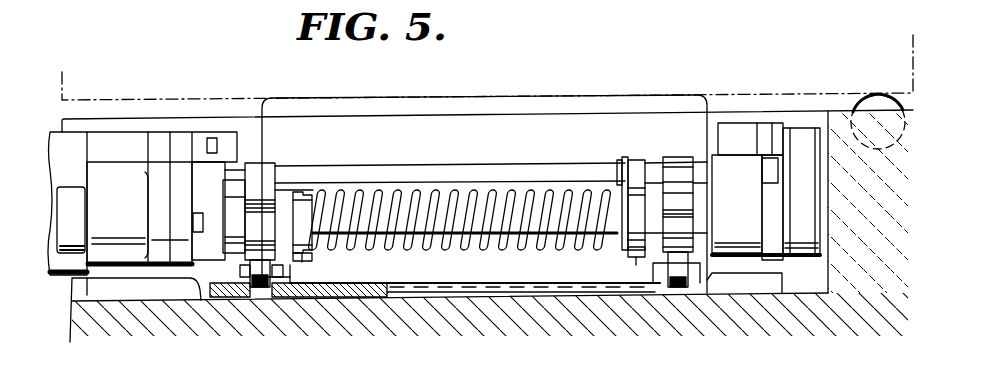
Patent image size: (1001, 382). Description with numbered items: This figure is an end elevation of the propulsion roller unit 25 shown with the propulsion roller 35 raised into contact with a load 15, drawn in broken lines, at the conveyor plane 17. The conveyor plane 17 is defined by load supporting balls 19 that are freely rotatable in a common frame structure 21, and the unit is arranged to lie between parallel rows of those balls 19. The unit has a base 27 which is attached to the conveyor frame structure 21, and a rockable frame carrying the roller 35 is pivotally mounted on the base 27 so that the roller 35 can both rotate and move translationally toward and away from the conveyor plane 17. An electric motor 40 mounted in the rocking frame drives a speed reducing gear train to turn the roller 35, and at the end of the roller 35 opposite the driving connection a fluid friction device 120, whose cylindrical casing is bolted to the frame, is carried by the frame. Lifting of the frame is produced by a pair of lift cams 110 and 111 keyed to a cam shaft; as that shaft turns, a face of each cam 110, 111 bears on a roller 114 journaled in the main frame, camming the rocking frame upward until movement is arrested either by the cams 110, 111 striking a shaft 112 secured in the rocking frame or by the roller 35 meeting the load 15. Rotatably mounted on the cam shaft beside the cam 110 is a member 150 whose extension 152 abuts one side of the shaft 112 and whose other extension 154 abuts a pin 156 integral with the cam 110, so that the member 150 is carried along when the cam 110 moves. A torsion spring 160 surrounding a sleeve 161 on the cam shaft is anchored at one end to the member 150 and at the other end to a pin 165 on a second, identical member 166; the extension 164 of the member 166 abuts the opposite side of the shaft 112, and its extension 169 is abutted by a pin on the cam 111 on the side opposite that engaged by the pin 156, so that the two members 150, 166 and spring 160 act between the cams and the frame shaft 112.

The load 15 is at (913, 48).
The conveyor plane 17 is at (96, 98).
The ball 19 is at (870, 100).
The frame structure 21 is at (118, 312).
The propulsion roller unit 25 is at (756, 86).
The base 27 is at (768, 283).
The propulsion roller 35 is at (482, 99).
The electric motor 40 is at (140, 140).
The lift cam 110 is at (258, 175).
The lift cam 111 is at (680, 157).
The shaft 112 is at (398, 166).
The roller 114 is at (683, 285).
The fluid friction device 120 is at (826, 207).
The member 150 is at (312, 261).
The extension 152 is at (318, 190).
The extension 154 is at (292, 265).
The pin 156 is at (303, 191).
The torsion spring 160 is at (468, 188).
The sleeve 161 is at (515, 205).
The extension 164 is at (638, 160).
The pin 165 is at (608, 168).
The member 166 is at (617, 260).
The extension 169 is at (640, 258).